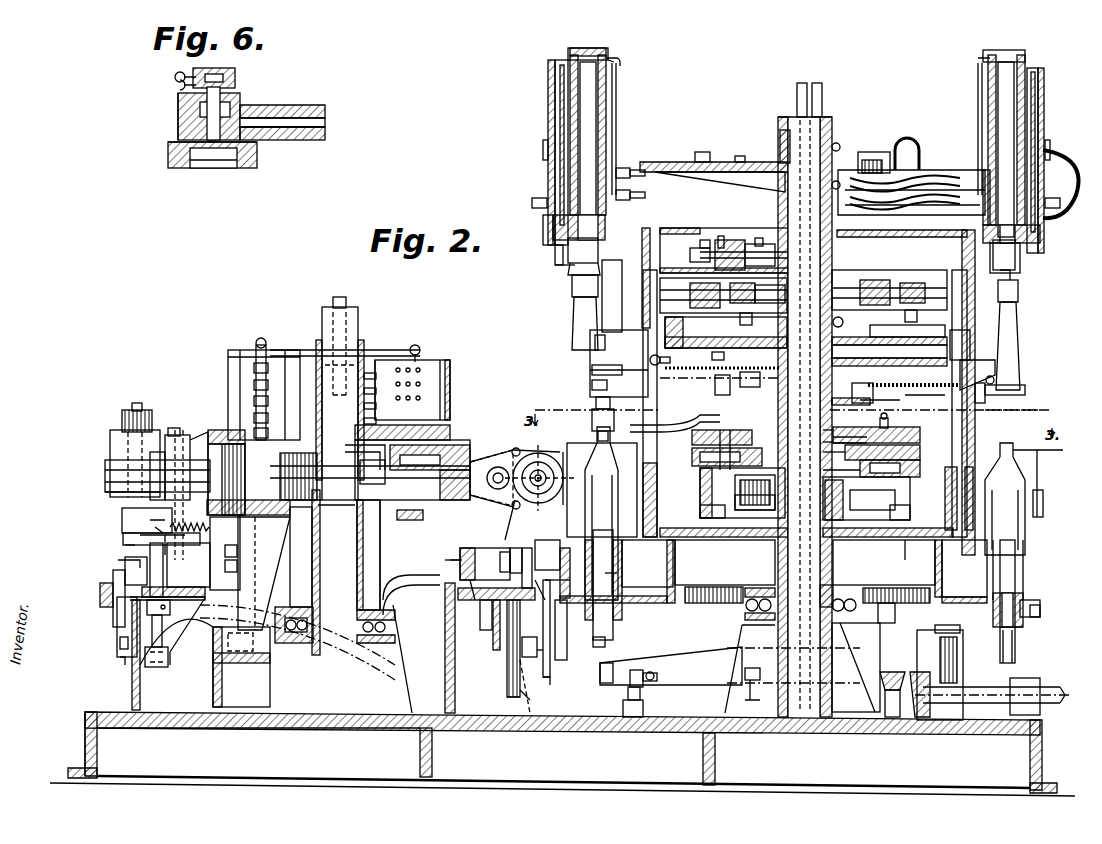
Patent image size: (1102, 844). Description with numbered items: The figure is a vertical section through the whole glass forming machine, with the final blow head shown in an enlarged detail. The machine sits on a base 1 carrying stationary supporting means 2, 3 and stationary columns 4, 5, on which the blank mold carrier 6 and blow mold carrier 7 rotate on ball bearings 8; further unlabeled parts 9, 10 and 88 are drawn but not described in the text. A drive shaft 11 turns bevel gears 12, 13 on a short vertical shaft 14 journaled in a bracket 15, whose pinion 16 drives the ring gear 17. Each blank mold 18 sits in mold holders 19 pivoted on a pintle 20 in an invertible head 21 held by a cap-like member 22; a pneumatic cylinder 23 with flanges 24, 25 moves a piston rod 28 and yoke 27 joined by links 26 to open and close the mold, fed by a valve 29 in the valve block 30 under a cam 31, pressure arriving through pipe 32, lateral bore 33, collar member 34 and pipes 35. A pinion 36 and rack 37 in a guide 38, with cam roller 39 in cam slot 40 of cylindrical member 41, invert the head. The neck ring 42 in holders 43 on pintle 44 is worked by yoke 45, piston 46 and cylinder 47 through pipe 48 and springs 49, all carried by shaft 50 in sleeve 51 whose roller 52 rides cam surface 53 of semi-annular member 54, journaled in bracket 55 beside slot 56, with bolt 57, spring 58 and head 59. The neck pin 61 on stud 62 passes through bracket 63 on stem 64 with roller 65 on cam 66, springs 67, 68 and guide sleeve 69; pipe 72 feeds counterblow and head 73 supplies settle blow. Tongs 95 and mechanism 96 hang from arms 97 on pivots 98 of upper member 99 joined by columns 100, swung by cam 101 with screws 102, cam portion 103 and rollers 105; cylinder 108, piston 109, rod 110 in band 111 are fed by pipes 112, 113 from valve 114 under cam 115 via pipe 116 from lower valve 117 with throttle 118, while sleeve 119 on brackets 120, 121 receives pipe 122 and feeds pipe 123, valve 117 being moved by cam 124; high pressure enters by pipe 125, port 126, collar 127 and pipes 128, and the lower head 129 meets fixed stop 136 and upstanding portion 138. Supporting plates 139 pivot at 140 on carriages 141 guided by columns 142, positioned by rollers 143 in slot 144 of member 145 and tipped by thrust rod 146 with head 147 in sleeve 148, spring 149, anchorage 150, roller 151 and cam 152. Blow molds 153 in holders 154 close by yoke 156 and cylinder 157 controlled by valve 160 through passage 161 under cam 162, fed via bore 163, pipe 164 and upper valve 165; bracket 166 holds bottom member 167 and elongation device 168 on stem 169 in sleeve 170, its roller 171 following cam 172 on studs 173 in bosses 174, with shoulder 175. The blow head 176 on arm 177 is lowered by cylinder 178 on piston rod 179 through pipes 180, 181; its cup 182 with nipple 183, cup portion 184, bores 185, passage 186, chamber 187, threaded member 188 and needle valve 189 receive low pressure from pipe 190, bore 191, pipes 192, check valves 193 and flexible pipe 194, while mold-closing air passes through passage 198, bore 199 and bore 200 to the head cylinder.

In FIG. 2, the base 1 is at (85, 745).
In FIG. 2, the stationary supporting means 2 is at (400, 688).
In FIG. 2, the stationary supporting means 3 is at (745, 635).
In FIG. 2, the stationary column 4 is at (358, 320).
In FIG. 2, the stationary column 5 is at (830, 140).
In FIG. 2, the blank mold carrier 6 is at (425, 557).
In FIG. 2, the blow mold carrier 7 is at (884, 562).
In FIG. 2, the ball bearings 8 is at (293, 618).
In FIG. 2, the bracket 9 is at (100, 590).
In FIG. 2, the plate 10 is at (1040, 612).
In FIG. 2, the drive shaft 11 is at (1055, 680).
In FIG. 2, the bevel gear 12 is at (918, 720).
In FIG. 2, the bevel gear 13 is at (893, 720).
In FIG. 2, the short vertical shaft 14 is at (870, 655).
In FIG. 2, the bracket 15 is at (939, 672).
In FIG. 2, the pinion 16 is at (905, 590).
In FIG. 2, the ring gear 17 is at (690, 605).
In FIG. 2, the blank mold 18 is at (112, 440).
In FIG. 2, the mold holder 19 is at (106, 486).
In FIG. 2, the pintle 20 is at (178, 435).
In FIG. 2, the invertible head 21 is at (205, 445).
In FIG. 2, the cap-like member 22 is at (455, 445).
In FIG. 2, the pneumatic cylinder 23 is at (380, 535).
In FIG. 2, the circumferential flange 24 is at (315, 505).
In FIG. 2, the circumferential flange 25 is at (318, 480).
In FIG. 2, the short links 26 is at (106, 472).
In FIG. 2, the V-shaped yoke 27 is at (185, 440).
In FIG. 2, the piston rod 28 is at (460, 552).
In FIG. 2, the valve 29 is at (430, 445).
In FIG. 2, the valve block 30 is at (445, 362).
In FIG. 2, the stationary cam 31 is at (392, 360).
In FIG. 2, the pipe 32 is at (340, 297).
In FIG. 2, the lateral bore 33 is at (348, 340).
In FIG. 2, the collar member 34 is at (362, 345).
In FIG. 2, the pipes 35 is at (262, 342).
In FIG. 2, the pinion 36 is at (240, 468).
In FIG. 2, the rack 37 is at (330, 530).
In FIG. 2, the guide 38 is at (318, 598).
In FIG. 2, the cam roller 39 is at (213, 660).
In FIG. 2, the closed cam slot 40 is at (432, 600).
In FIG. 2, the cylindrical member 41 is at (450, 690).
In FIG. 2, the neck ring 42 is at (547, 546).
In FIG. 2, the neck ring holder 43 is at (122, 514).
In FIG. 2, the pintle 44 is at (522, 565).
In FIG. 2, the yoke member 45 is at (188, 565).
In FIG. 2, the piston 46 is at (500, 560).
In FIG. 2, the pneumatic cylinder 47 is at (234, 558).
In FIG. 2, the pipe 48 is at (238, 500).
In FIG. 2, the tension springs 49 is at (190, 585).
In FIG. 2, the vertical shaft 50 is at (164, 565).
In FIG. 2, the sleeve member 51 is at (160, 668).
In FIG. 2, the cam roller 52 is at (147, 612).
In FIG. 2, the cam surface 53 is at (205, 620).
In FIG. 2, the semi-annular member 54 is at (145, 730).
In FIG. 2, the bracket 55 is at (507, 680).
In FIG. 2, the slot 56 is at (215, 578).
In FIG. 2, the bolt 57 is at (528, 715).
In FIG. 2, the compression spring 58 is at (560, 680).
In FIG. 2, the head 59 is at (512, 700).
In FIG. 2, the neck pin 61 is at (562, 566).
In FIG. 2, the stud 62 is at (136, 571).
In FIG. 2, the bracket 63 is at (118, 561).
In FIG. 2, the stem 64 is at (117, 628).
In FIG. 2, the roller 65 is at (118, 640).
In FIG. 2, the cam 66 is at (118, 662).
In FIG. 2, the light compression spring 67 is at (140, 538).
In FIG. 2, the spring 68 is at (152, 522).
In FIG. 2, the guide sleeve 69 is at (113, 612).
In FIG. 2, the pipe 72 is at (125, 547).
In FIG. 2, the unitary structure 73 is at (124, 415).
In FIG. 2, the terminal 88 is at (138, 405).
In FIG. 2, the tongs 95 is at (575, 285).
In FIG. 2, the tongs operating mechanism 96 is at (568, 272).
In FIG. 2, the arm 97 is at (905, 175).
In FIG. 2, the vertical pivot 98 is at (872, 152).
In FIG. 2, the upper member 99 is at (662, 228).
In FIG. 2, the vertical columns 100 is at (643, 450).
In FIG. 2, the cam 101 is at (655, 160).
In FIG. 2, the clamping screws 102 is at (840, 150).
In FIG. 2, the adjustable cam portion 103 is at (758, 160).
In FIG. 2, the roller 105 is at (880, 178).
In FIG. 2, the pneumatic cylinder 108 is at (605, 115).
In FIG. 2, the piston 109 is at (585, 50).
In FIG. 2, the piston rod 110 is at (588, 122).
In FIG. 2, the annular band 111 is at (606, 212).
In FIG. 2, the pipe 112 is at (618, 80).
In FIG. 2, the pipe 113 is at (628, 168).
In FIG. 2, the valve 114 is at (742, 240).
In FIG. 2, the stationary cam 115 is at (762, 251).
In FIG. 2, the pipe 116 is at (690, 288).
In FIG. 2, the lower valve 117 is at (752, 326).
In FIG. 2, the throttling valve 118 is at (695, 255).
In FIG. 2, the sleeve member 119 is at (550, 85).
In FIG. 2, the bracket 120 is at (545, 148).
In FIG. 2, the bracket 121 is at (545, 225).
In FIG. 2, the pipe 122 is at (532, 200).
In FIG. 2, the pipe 123 is at (558, 250).
In FIG. 2, the operating cam 124 is at (765, 303).
In FIG. 2, the pipe 125 is at (818, 95).
In FIG. 2, the lateral port 126 is at (889, 333).
In FIG. 2, the collar 127 is at (845, 320).
In FIG. 2, the pipes 128 is at (674, 359).
In FIG. 2, the lower head 129 is at (1040, 233).
In FIG. 2, the fixed stop 136 is at (1080, 190).
In FIG. 2, the upstanding portion 138 is at (923, 154).
In FIG. 2, the supporting plate 139 is at (592, 370).
In FIG. 2, the pivot 140 is at (990, 365).
In FIG. 2, the carriage 141 is at (632, 335).
In FIG. 2, the column 142 is at (700, 370).
In FIG. 2, the cam roller 143 is at (905, 366).
In FIG. 2, the cam slot 144 is at (928, 317).
In FIG. 2, the member 145 is at (889, 353).
In FIG. 2, the thrust rod 146 is at (1025, 400).
In FIG. 2, the head 147 is at (1005, 380).
In FIG. 2, the guide sleeve 148 is at (925, 402).
In FIG. 2, the tension spring 149 is at (732, 395).
In FIG. 2, the anchorage 150 is at (955, 383).
In FIG. 2, the cam roller 151 is at (750, 388).
In FIG. 2, the stationary cam 152 is at (883, 402).
In FIG. 2, the blow mold 153 is at (590, 445).
In FIG. 2, the holder 154 is at (1045, 498).
In FIG. 2, the V-shaped yoke member 156 is at (895, 495).
In FIG. 2, the pneumatic cylinder 157 is at (827, 458).
In FIG. 2, the valve 160 is at (692, 456).
In FIG. 2, the passage 161 is at (903, 455).
In FIG. 2, the stationary cam 162 is at (814, 431).
In FIG. 2, the lateral bore 163 is at (813, 402).
In FIG. 2, the pipe 164 is at (876, 426).
In FIG. 2, the upper valve 165 is at (905, 445).
In FIG. 2, the bracket member 166 is at (1023, 585).
In FIG. 2, the blow mold bottom member 167 is at (1023, 565).
In FIG. 2, the elongation controlling device 168 is at (647, 563).
In FIG. 2, the stem 169 is at (610, 625).
In FIG. 2, the depending sleeve portion 170 is at (1023, 628).
In FIG. 2, the cam roller 171 is at (605, 645).
In FIG. 2, the cam 172 is at (710, 675).
In FIG. 2, the supporting stud 173 is at (655, 690).
In FIG. 2, the boss 174 is at (633, 718).
In FIG. 2, the shoulder 175 is at (1043, 601).
In FIG. 6, the final blow head 176 is at (164, 133).
In FIG. 6, the arm 177 is at (326, 128).
In FIG. 2, the pneumatic cylinder 178 is at (592, 340).
In FIG. 2, the piston rod 179 is at (615, 258).
In FIG. 2, the pipe 180 is at (574, 330).
In FIG. 2, the pipe 181 is at (592, 384).
In FIG. 6, the cup-shaped portion 182 is at (258, 155).
In FIG. 6, the nipple 183 is at (212, 150).
In FIG. 6, the cup-shaped portion 184 is at (222, 162).
In FIG. 6, the lateral bores 185 is at (270, 105).
In FIG. 6, the passage 186 is at (326, 120).
In FIG. 6, the chamber 187 is at (185, 115).
In FIG. 6, the threaded member 188 is at (240, 98).
In FIG. 6, the needle valve 189 is at (228, 70).
In FIG. 2, the pipe 190 is at (798, 100).
In FIG. 2, the longitudinal bore 191 is at (784, 178).
In FIG. 2, the pipe 192 is at (725, 356).
In FIG. 2, the check valve 193 is at (700, 380).
In FIG. 2, the flexible pipe 194 is at (693, 437).
In FIG. 2, the passage 198 is at (700, 480).
In FIG. 2, the bore 199 is at (721, 571).
In FIG. 2, the bore 200 is at (756, 505).